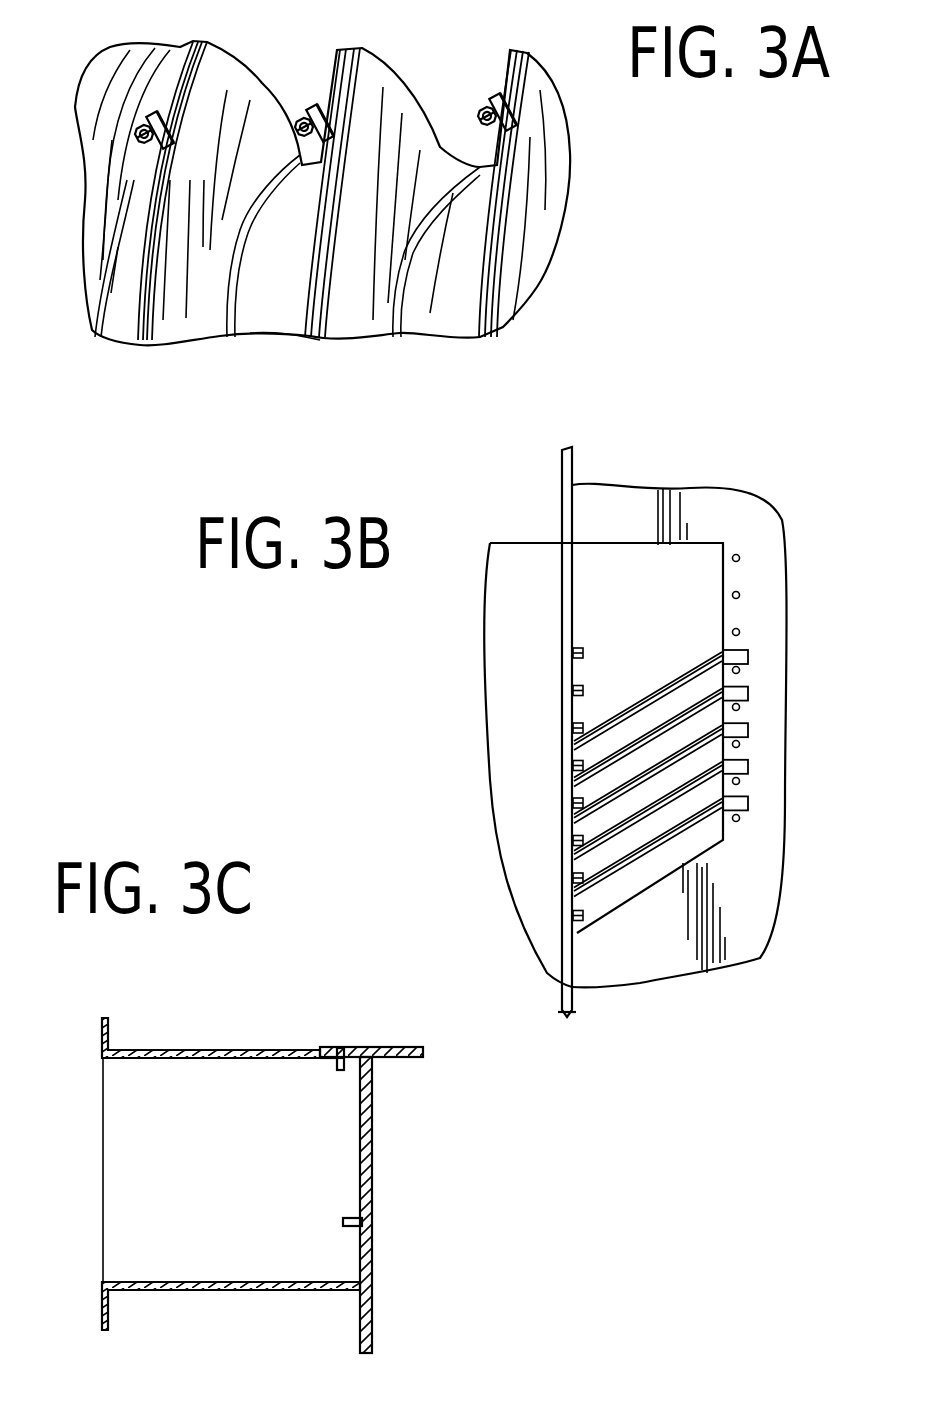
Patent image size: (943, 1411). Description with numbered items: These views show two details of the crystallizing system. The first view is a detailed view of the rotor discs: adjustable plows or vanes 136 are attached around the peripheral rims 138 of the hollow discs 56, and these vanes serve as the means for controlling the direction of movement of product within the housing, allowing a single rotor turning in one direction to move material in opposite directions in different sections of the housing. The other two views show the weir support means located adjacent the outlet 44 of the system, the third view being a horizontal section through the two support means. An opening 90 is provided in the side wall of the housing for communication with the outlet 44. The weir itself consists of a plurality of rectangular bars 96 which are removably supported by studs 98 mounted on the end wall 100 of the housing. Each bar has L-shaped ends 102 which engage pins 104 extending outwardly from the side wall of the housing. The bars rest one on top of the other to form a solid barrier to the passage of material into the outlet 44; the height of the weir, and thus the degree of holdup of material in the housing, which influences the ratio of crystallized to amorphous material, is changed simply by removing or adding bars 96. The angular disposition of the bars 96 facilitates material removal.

In FIG. 3A, the hollow disc 56 is at (212, 128).
In FIG. 3A, the adjustable plow or vane 136 is at (330, 110).
In FIG. 3A, the peripheral rim 138 is at (298, 304).
In FIG. 3B, the end wall 100 is at (561, 520).
In FIG. 3C, the end wall 100 is at (383, 1046).
In FIG. 3B, the opening 90 is at (641, 542).
In FIG. 3B, the pin 104 is at (733, 561).
In FIG. 3C, the pin 104 is at (343, 1222).
In FIG. 3B, the rectangular bar 96 is at (677, 679).
In FIG. 3B, the stud 98 is at (572, 801).
In FIG. 3C, the stud 98 is at (339, 1072).
In FIG. 3B, the L-shaped end 102 is at (750, 803).
In FIG. 3C, the outlet 44 is at (233, 1049).